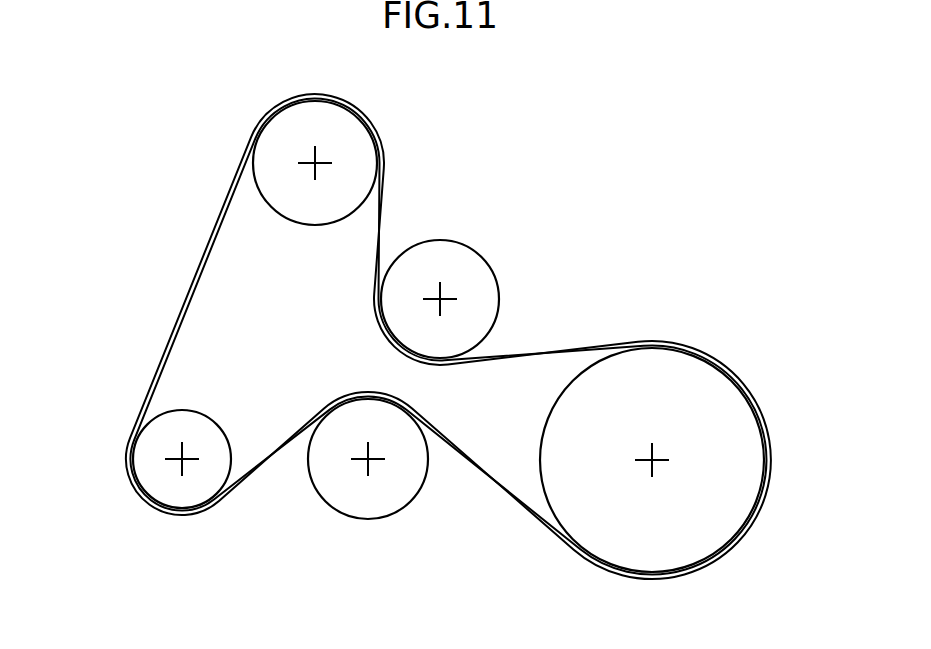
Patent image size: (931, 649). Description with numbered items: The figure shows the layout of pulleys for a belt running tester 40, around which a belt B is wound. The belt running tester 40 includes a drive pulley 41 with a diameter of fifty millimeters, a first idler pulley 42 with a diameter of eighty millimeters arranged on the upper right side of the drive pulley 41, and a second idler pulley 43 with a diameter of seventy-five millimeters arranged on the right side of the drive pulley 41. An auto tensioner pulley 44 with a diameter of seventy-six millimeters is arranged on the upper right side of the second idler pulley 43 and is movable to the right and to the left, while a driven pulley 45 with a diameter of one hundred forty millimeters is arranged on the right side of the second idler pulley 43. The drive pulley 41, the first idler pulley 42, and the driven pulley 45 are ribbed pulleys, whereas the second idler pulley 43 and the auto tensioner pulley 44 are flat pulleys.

The belt running tester 40 is at (600, 170).
The belt B is at (562, 348).
The drive pulley 41 is at (148, 455).
The first idler pulley 42 is at (290, 132).
The second idler pulley 43 is at (360, 507).
The auto tensioner pulley 44 is at (438, 252).
The driven pulley 45 is at (747, 455).